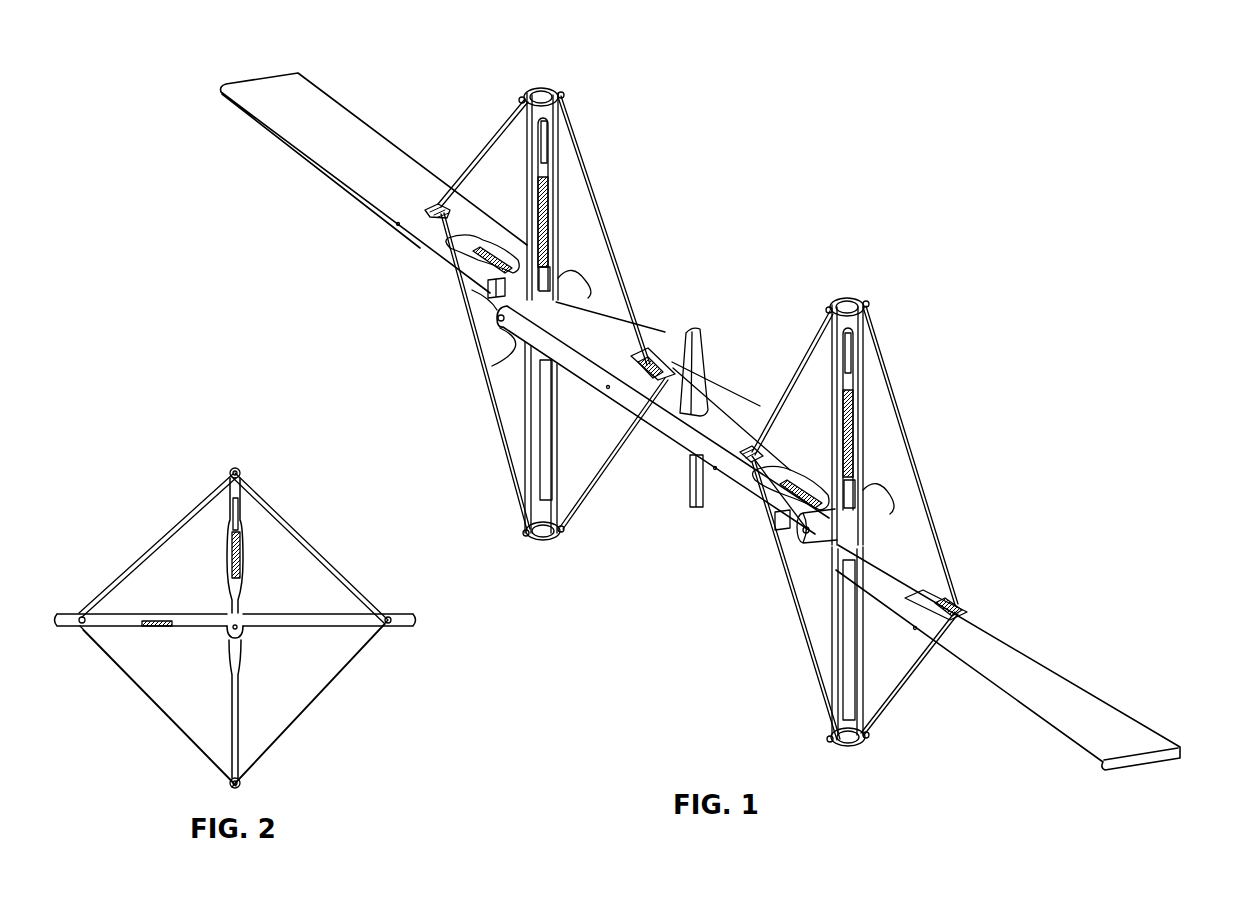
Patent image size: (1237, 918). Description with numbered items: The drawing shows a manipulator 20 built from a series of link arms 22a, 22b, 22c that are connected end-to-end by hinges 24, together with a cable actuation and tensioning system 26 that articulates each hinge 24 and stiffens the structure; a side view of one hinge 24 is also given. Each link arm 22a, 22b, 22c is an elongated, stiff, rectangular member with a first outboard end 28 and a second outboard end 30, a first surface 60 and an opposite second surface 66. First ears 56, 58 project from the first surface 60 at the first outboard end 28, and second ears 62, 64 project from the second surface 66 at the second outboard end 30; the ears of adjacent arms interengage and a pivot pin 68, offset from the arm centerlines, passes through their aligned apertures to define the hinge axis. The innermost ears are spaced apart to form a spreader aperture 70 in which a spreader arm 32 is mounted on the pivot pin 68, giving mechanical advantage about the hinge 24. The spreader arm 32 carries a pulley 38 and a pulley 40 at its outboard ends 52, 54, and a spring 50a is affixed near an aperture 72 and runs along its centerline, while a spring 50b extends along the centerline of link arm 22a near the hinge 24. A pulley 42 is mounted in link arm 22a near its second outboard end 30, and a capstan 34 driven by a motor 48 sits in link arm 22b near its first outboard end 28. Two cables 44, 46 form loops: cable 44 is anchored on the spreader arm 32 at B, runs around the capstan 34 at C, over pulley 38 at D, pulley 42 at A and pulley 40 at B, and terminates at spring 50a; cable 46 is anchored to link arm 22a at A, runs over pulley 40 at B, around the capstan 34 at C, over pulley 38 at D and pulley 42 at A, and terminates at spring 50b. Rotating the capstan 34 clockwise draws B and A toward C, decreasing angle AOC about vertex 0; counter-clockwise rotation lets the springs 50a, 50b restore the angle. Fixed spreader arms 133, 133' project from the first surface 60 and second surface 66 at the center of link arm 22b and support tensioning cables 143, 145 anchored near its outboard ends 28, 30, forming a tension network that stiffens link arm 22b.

In FIG. 1, the manipulator 20 is at (1028, 488).
In FIG. 1, the first link arm 22a is at (367, 210).
In FIG. 2, the first link arm 22a is at (110, 613).
In FIG. 1, the second link arm 22b is at (705, 462).
In FIG. 2, the second link arm 22b is at (295, 614).
In FIG. 1, the third link arm 22c is at (1085, 673).
In FIG. 1, the hinge 24 is at (603, 272).
In FIG. 2, the hinge 24 is at (257, 637).
In FIG. 1, the cable actuation and tensioning system 26 is at (600, 155).
In FIG. 2, the cable actuation and tensioning system 26 is at (345, 542).
In FIG. 1, the first outboard end 28 is at (568, 311).
In FIG. 1, the second outboard end 30 is at (496, 318).
In FIG. 1, the spreader arm 32 is at (558, 180).
In FIG. 2, the spreader arm 32 is at (243, 707).
In FIG. 1, the capstan 34 is at (657, 383).
In FIG. 2, the capstan 34 is at (393, 628).
In FIG. 1, the pulley 38 is at (550, 545).
In FIG. 2, the pulley 38 is at (228, 787).
In FIG. 1, the pulley 40 is at (535, 90).
In FIG. 2, the pulley 40 is at (229, 468).
In FIG. 1, the pulley 42 is at (438, 200).
In FIG. 2, the pulley 42 is at (78, 628).
In FIG. 1, the cable 44 is at (497, 140).
In FIG. 2, the cable 44 is at (243, 522).
In FIG. 1, the cable 46 is at (503, 118).
In FIG. 2, the cable 46 is at (177, 520).
In FIG. 1, the motor 48 is at (655, 355).
In FIG. 2, the motor 48 is at (362, 628).
In FIG. 1, the spring 50a is at (548, 220).
In FIG. 2, the spring 50a is at (230, 535).
In FIG. 1, the spring 50b is at (470, 258).
In FIG. 2, the spring 50b is at (167, 628).
In FIG. 1, the outboard end 52 is at (527, 538).
In FIG. 1, the outboard end 54 is at (556, 90).
In FIG. 1, the first ear 56 is at (510, 330).
In FIG. 1, the first ear 58 is at (827, 547).
In FIG. 1, the first surface 60 is at (333, 127).
In FIG. 1, the second ear 62 is at (488, 290).
In FIG. 1, the second ear 64 is at (595, 275).
In FIG. 1, the second surface 66 is at (303, 163).
In FIG. 1, the pivot pin 68 is at (497, 324).
In FIG. 1, the spreader aperture 70 is at (590, 295).
In FIG. 1, the aperture 72 is at (545, 133).
In FIG. 1, the fixed spreader arm 133 is at (661, 506).
In FIG. 1, the fixed spreader arm 133' is at (769, 307).
In FIG. 1, the tensioning cable 143 is at (660, 460).
In FIG. 1, the tensioning cable 145 is at (708, 350).
In FIG. 2, the vertex of angle AOC 0 is at (240, 615).
In FIG. 2, the point A is at (80, 614).
In FIG. 2, the point B is at (241, 469).
In FIG. 2, the point C is at (392, 614).
In FIG. 2, the point D is at (240, 789).